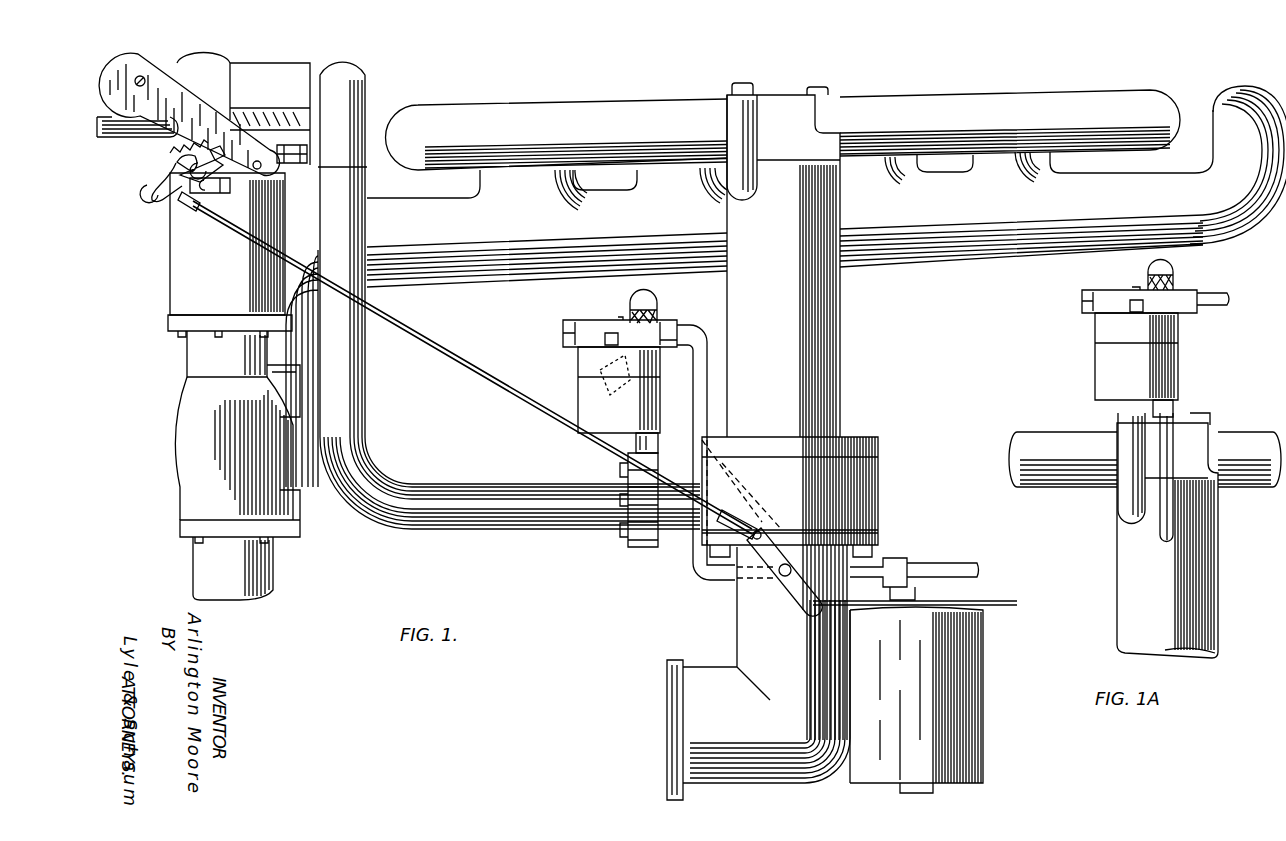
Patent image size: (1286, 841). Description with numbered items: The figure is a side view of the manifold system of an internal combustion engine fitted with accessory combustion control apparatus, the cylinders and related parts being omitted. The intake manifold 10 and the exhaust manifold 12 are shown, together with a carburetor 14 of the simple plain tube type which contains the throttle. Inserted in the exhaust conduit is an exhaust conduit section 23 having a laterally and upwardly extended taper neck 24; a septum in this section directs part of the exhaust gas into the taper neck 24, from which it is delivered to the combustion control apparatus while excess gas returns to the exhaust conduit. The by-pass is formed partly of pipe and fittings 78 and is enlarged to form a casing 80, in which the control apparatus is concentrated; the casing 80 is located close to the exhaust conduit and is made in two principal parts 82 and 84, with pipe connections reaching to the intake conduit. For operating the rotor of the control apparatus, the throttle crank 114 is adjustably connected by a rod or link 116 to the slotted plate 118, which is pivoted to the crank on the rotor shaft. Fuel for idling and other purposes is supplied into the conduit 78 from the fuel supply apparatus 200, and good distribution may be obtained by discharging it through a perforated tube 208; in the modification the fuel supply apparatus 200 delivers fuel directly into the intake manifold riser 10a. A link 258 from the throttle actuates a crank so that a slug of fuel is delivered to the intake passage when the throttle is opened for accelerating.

In FIG. 1, the intake manifold 10 is at (903, 100).
In FIG. 1, the intake manifold riser 10a is at (820, 355).
In FIG. 1A, the intake manifold riser 10a is at (1185, 602).
In FIG. 1, the exhaust manifold 12 is at (937, 240).
In FIG. 1, the carburetor 14 is at (676, 708).
In FIG. 1, the inserted exhaust conduit section 23 is at (205, 499).
In FIG. 1, the taper neck 24 is at (187, 391).
In FIG. 1, the by-pass conduit 78 is at (452, 489).
In FIG. 1, the casing 80 is at (170, 240).
In FIG. 1, the casing part 82 is at (227, 244).
In FIG. 1, the casing part 84 is at (203, 113).
In FIG. 1, the throttle crank 114 is at (793, 590).
In FIG. 1, the rod or link 116 is at (449, 366).
In FIG. 1, the slotted plate 118 is at (168, 172).
In FIG. 1, the fuel supply apparatus 200 is at (580, 381).
In FIG. 1A, the fuel supply apparatus 200 is at (1176, 362).
In FIG. 1, the perforated tube 208 is at (663, 522).
In FIG. 1, the link 258 is at (680, 422).